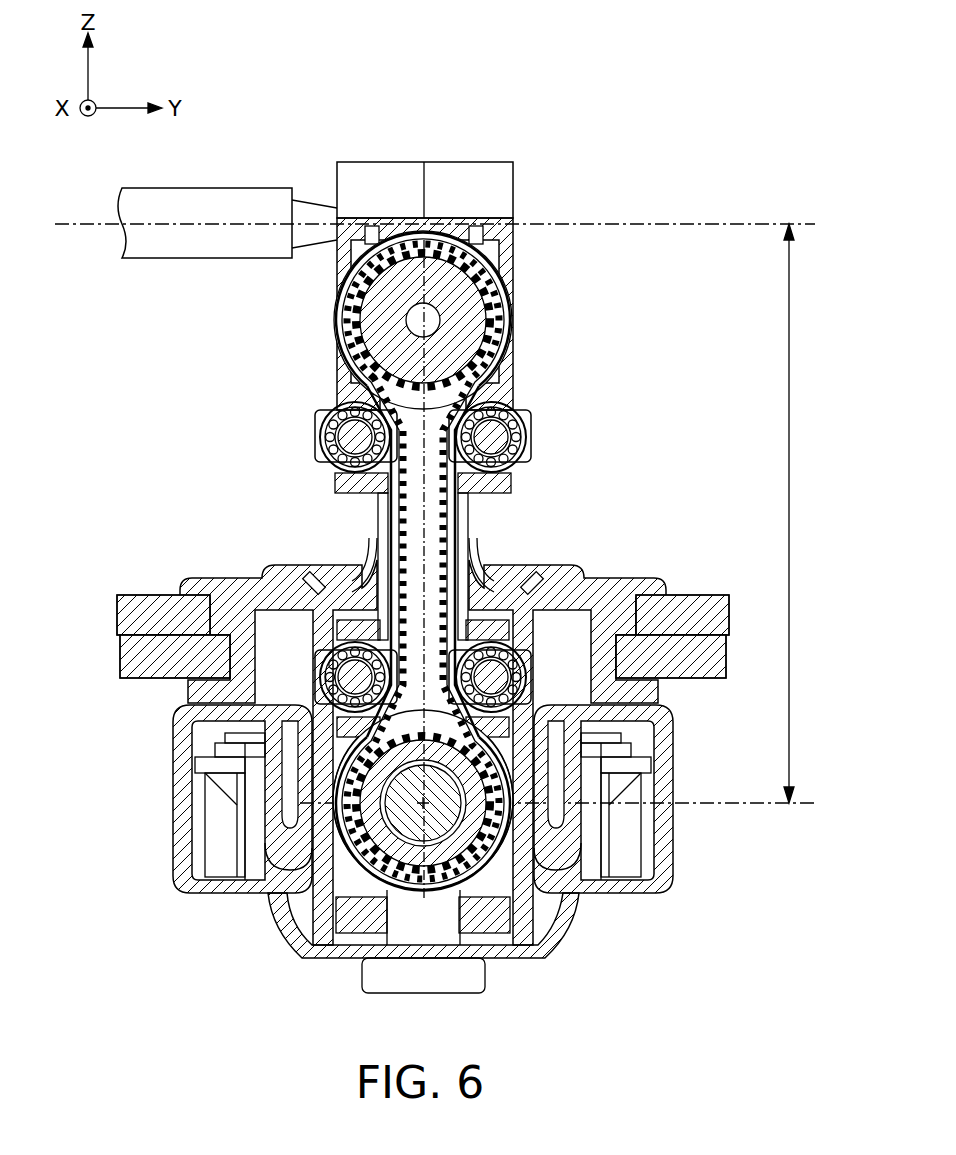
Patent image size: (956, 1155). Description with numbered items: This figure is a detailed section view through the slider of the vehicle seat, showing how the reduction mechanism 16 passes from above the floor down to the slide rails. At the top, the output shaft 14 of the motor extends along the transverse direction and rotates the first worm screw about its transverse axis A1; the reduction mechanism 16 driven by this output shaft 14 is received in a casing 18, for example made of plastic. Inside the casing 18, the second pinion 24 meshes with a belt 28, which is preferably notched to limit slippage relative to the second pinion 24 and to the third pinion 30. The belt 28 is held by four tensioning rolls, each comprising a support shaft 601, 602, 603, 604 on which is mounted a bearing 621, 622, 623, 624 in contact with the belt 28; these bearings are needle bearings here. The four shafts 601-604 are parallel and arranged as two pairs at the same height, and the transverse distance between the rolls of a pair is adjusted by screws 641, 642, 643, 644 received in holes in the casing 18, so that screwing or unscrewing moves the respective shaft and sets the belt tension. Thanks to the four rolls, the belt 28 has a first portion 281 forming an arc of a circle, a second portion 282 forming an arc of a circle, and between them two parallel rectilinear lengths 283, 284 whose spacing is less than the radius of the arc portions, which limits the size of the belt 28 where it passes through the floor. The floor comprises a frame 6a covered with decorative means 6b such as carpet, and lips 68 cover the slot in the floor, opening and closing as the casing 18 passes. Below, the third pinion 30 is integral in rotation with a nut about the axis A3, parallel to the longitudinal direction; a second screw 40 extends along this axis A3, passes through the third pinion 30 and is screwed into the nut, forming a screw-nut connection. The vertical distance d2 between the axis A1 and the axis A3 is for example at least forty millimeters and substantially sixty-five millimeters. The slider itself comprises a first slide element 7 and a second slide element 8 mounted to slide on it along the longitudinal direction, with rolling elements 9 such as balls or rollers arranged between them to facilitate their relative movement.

The output shaft 14 is at (232, 207).
The reduction mechanism 16 is at (662, 212).
The casing 18 is at (389, 176).
The second pinion 24 is at (392, 318).
The belt 28 is at (498, 877).
The first portion 281 is at (475, 272).
The second portion 282 is at (362, 873).
The rectilinear length 283 is at (383, 512).
The rectilinear length 284 is at (466, 512).
The third pinion 30 is at (435, 815).
The second screw 40 is at (416, 826).
The support shaft 601 is at (320, 437).
The support shaft 602 is at (507, 400).
The support shaft 603 is at (525, 690).
The support shaft 604 is at (333, 652).
The bearing 621 is at (338, 449).
The bearing 622 is at (508, 455).
The bearing 623 is at (508, 663).
The bearing 624 is at (338, 690).
The screw 641 is at (318, 410).
The screw 642 is at (530, 428).
The screw 643 is at (530, 668).
The screw 644 is at (333, 668).
The lips 68 is at (362, 562).
The frame 6a is at (143, 656).
The decorative means 6b is at (163, 598).
The first slide element 7 is at (545, 948).
The second slide element 8 is at (282, 862).
The rolling elements 9 is at (220, 832).
The axis A1 is at (88, 221).
The axis A3 is at (588, 893).
The distance d2 is at (805, 513).